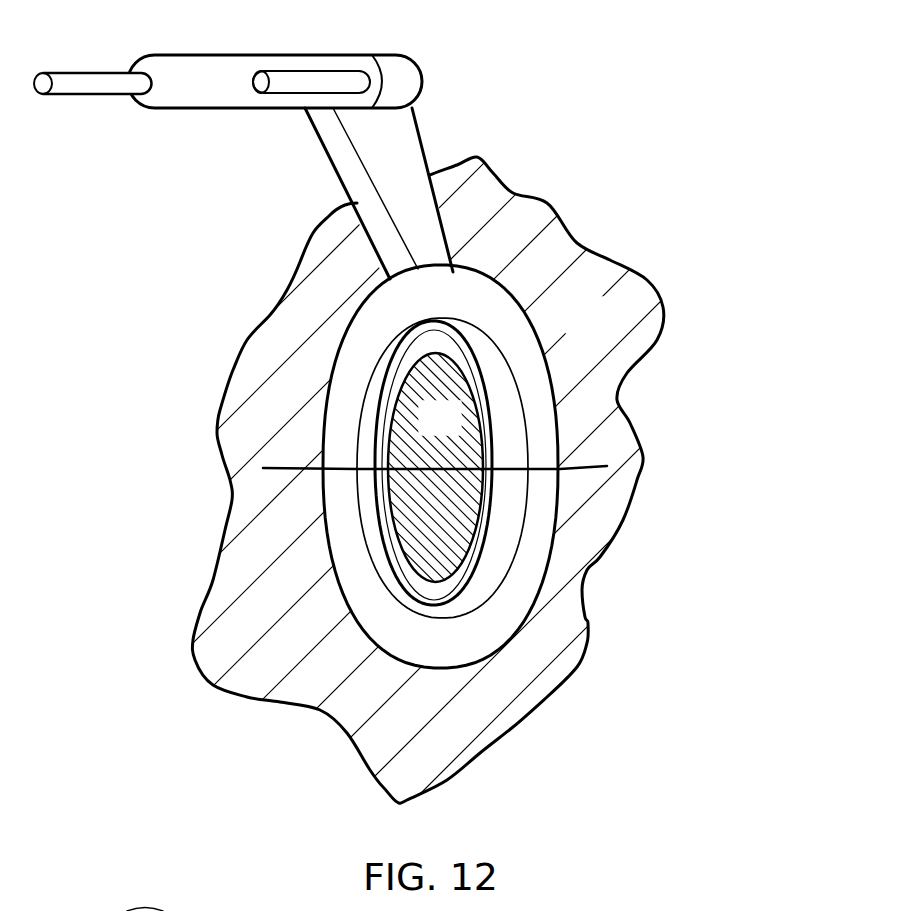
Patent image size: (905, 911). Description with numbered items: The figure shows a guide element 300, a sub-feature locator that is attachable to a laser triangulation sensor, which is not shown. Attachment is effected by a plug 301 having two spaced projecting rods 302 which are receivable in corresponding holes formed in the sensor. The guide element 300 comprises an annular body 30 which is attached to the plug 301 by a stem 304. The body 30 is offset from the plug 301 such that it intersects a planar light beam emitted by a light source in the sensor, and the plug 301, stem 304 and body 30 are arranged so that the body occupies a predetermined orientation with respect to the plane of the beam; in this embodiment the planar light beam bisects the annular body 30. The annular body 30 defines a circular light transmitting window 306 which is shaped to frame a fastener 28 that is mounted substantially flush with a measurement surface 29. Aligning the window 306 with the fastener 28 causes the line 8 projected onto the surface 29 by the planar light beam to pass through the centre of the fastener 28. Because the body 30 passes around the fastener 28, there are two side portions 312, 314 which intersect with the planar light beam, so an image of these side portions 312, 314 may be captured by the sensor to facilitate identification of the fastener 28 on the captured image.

The guide element 300 is at (497, 95).
The plug 301 is at (220, 73).
The projecting rods 302 is at (100, 85).
The stem 304 is at (390, 172).
The annular body 30 is at (473, 322).
The measurement surface 29 is at (540, 353).
The line 8 is at (582, 468).
The fastener 28 is at (458, 431).
The side portion 314 is at (342, 443).
The side portion 312 is at (510, 490).
The light transmitting window 306 is at (392, 547).